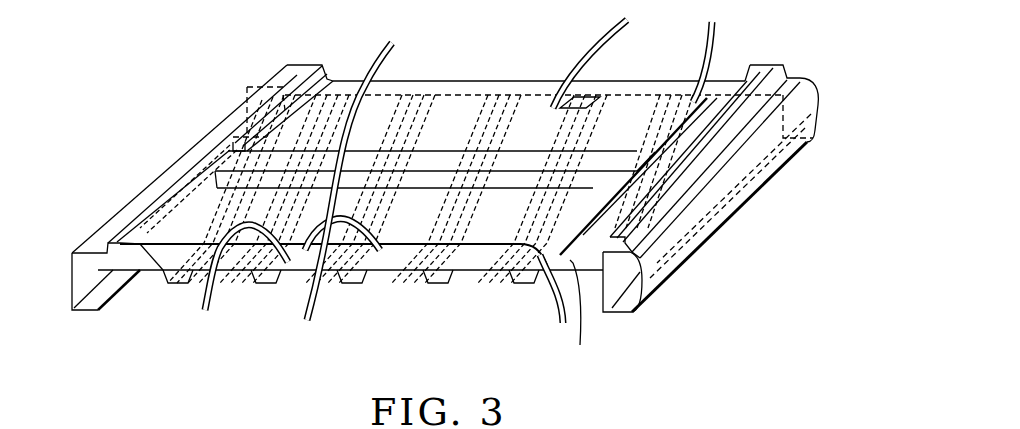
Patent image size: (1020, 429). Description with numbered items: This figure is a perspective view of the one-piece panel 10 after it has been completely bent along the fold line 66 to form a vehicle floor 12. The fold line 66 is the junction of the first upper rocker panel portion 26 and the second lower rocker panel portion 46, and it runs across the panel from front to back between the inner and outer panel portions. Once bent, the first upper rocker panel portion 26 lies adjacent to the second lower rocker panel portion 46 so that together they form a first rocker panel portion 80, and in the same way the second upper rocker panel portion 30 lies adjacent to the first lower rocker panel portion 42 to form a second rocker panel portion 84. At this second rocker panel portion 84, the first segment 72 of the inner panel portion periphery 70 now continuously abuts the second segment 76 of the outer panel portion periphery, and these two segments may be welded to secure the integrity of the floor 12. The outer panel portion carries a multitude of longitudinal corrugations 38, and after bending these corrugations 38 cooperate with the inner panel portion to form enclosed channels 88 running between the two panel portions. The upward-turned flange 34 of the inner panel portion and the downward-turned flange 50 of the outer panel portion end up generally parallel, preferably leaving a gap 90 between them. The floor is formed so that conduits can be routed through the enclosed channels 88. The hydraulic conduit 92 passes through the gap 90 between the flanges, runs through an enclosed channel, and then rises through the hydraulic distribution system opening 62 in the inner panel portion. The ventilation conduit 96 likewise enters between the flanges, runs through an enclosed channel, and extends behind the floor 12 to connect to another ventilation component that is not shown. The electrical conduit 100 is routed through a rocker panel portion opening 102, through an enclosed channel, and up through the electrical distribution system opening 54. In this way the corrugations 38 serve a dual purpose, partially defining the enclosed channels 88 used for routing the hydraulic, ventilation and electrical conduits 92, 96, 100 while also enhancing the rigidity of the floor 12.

The one-piece panel 10 is at (132, 125).
The vehicle floor 12 is at (189, 58).
The first upper rocker panel portion 26 is at (296, 75).
The second upper rocker panel portion 30 is at (757, 70).
The upward-turned flange 34 is at (525, 244).
The corrugations 38 is at (262, 285).
The first lower rocker panel portion 42 is at (596, 284).
The second lower rocker panel portion 46 is at (110, 288).
The downward-turned flange 50 is at (483, 246).
The electrical distribution system opening 54 is at (682, 97).
The hydraulic distribution system opening 62 is at (278, 285).
The fold line 66 is at (89, 313).
The inner panel portion periphery 70 is at (428, 80).
The first segment 72 is at (704, 246).
The second segment 76 is at (665, 272).
The first rocker panel portion 80 is at (268, 95).
The second rocker panel portion 84 is at (730, 102).
The enclosed channels 88 is at (440, 105).
The gap 90 is at (176, 240).
The hydraulic conduit 92 is at (207, 313).
The ventilation conduit 96 is at (312, 320).
The electrical conduit 100 is at (562, 326).
The rocker panel portion opening 102 is at (580, 314).